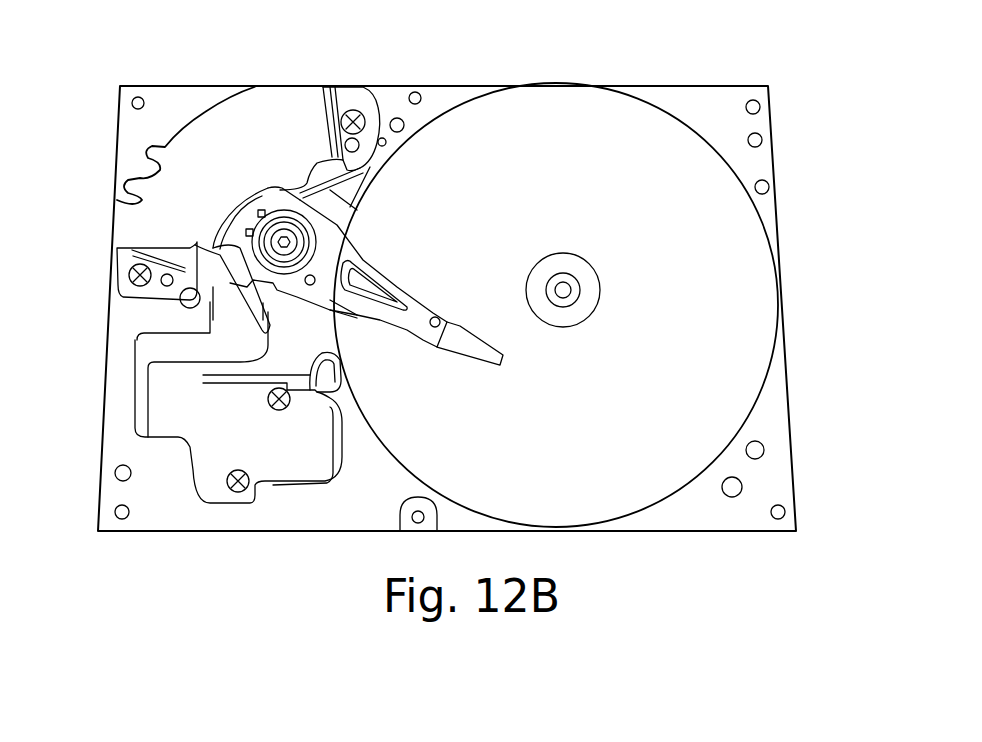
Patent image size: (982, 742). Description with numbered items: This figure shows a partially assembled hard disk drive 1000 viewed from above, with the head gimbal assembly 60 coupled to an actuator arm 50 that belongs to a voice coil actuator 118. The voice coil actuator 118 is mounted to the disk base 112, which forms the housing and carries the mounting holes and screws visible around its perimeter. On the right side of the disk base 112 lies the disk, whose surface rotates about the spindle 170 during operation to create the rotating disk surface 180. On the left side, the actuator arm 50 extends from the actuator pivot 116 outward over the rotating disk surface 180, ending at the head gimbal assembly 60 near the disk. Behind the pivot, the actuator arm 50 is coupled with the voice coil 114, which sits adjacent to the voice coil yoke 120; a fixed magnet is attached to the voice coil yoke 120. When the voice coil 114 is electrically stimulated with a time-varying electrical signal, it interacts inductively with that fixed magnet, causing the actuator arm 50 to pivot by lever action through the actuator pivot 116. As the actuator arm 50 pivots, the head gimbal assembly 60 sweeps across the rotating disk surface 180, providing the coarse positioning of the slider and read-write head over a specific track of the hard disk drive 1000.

The hard disk drive 1000 is at (813, 85).
The disk base 112 is at (720, 131).
The voice coil actuator 118 is at (93, 90).
The voice coil yoke 120 is at (223, 170).
The voice coil 114 is at (279, 200).
The actuator pivot 116 is at (290, 243).
The actuator arm 50 is at (418, 330).
The head gimbal assembly 60 is at (466, 349).
The spindle 170 is at (600, 313).
The rotating disk surface 180 is at (623, 462).